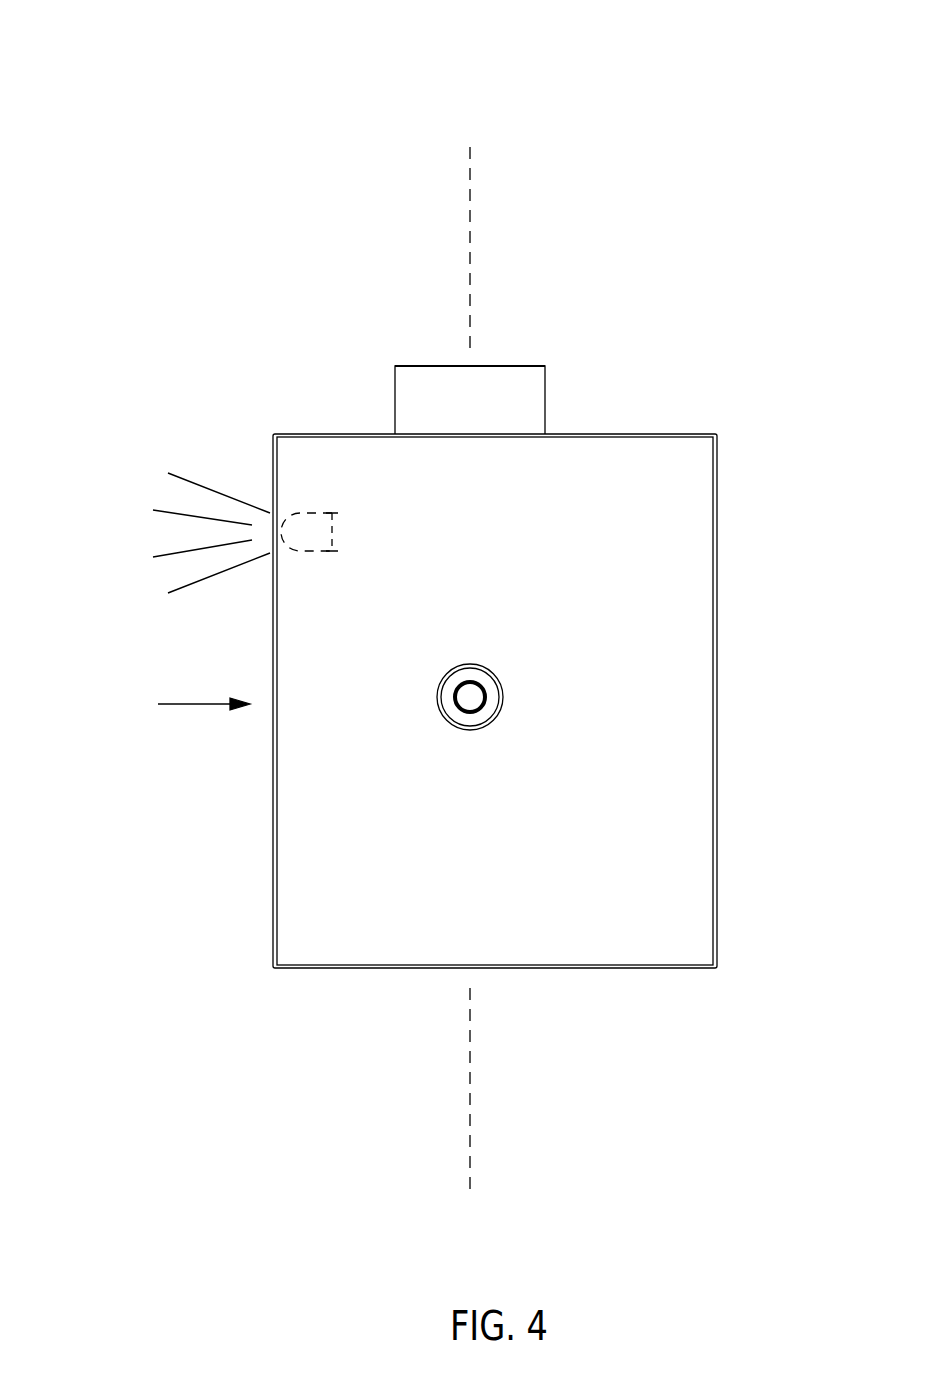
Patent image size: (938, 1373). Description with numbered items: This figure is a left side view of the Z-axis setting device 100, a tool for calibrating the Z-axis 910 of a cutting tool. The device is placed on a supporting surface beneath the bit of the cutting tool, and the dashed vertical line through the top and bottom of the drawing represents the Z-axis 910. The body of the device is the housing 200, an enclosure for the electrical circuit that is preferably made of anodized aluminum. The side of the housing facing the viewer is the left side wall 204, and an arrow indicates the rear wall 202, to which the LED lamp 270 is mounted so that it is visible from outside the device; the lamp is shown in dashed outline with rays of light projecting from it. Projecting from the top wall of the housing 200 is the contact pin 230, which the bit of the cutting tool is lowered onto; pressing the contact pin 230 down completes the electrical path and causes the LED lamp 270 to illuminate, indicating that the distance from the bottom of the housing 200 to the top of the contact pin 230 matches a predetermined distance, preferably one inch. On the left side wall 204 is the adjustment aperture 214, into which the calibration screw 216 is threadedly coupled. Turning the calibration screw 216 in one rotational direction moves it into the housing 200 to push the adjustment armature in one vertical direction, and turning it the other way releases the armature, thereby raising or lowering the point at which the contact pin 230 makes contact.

The Z-axis setting device 100 is at (122, 176).
The housing 200 is at (718, 540).
The rear wall 202 is at (179, 707).
The left side wall 204 is at (695, 920).
The adjustment aperture 214 is at (445, 720).
The calibration screw 216 is at (483, 697).
The contact pin 230 is at (515, 366).
The LED lamp 270 is at (311, 525).
The Z-axis 910 is at (470, 654).